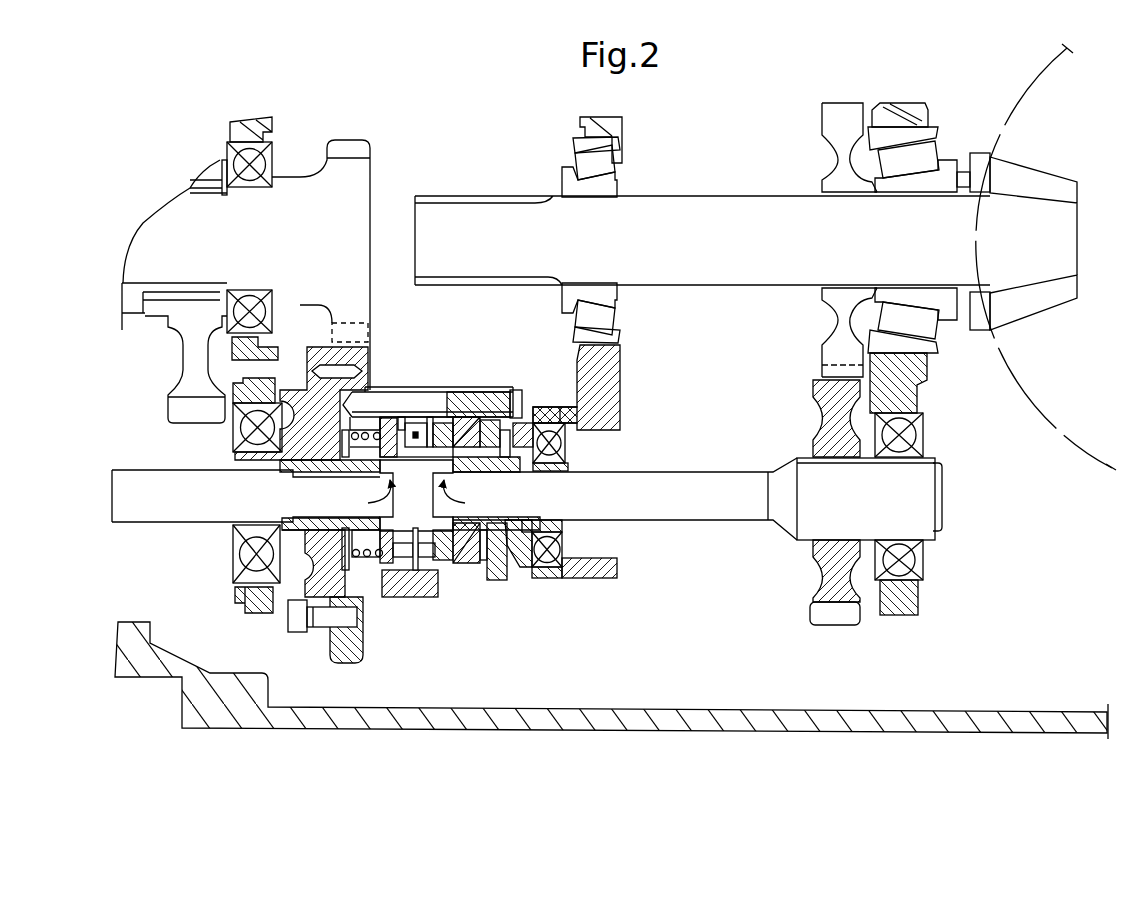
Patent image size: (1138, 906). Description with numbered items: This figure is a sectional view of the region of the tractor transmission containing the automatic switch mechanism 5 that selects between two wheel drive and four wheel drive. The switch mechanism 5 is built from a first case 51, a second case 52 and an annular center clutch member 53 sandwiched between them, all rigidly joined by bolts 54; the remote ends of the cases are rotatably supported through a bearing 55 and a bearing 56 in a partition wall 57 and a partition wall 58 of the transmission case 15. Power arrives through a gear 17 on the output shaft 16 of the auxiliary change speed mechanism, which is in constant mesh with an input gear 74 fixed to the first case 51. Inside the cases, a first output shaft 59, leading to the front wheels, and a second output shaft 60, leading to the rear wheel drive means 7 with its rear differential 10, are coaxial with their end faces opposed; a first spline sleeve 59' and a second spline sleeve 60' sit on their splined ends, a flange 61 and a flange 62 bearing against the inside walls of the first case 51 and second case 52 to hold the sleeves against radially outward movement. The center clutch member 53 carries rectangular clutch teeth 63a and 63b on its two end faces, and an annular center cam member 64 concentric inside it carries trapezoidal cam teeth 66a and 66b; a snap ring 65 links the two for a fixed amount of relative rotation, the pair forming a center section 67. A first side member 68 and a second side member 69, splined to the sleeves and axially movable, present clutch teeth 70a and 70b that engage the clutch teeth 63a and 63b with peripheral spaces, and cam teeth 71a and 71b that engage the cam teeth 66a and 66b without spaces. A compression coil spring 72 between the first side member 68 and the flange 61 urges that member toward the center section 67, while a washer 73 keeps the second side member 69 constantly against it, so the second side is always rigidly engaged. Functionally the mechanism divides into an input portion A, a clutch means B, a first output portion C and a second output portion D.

The automatic switch mechanism 5 is at (577, 385).
The rear wheel drive means 7 is at (968, 399).
The rear differential 10 is at (1042, 329).
The transmission case 15 is at (615, 712).
The output shaft of the auxiliary change speed mechanism 16 is at (142, 240).
The gear 17 is at (363, 141).
The first case 51 is at (315, 638).
The second case 52 is at (470, 567).
The annular center clutch member 53 is at (415, 598).
The bolts 54 is at (539, 386).
The bearing 55 is at (236, 569).
The bearing 56 is at (566, 563).
The partition wall 57 is at (244, 607).
The partition wall 58 is at (604, 574).
The first output shaft 59 is at (246, 516).
The first spline sleeve 59' is at (330, 528).
The second output shaft 60 is at (697, 513).
The second spline sleeve 60' is at (531, 565).
The flange 61 is at (354, 560).
The flange 62 is at (487, 560).
The clutch teeth 63a is at (403, 447).
The clutch teeth 63b is at (428, 425).
The annular center cam member 64 is at (418, 462).
The snap ring 65 is at (428, 580).
The cam teeth 66a is at (392, 445).
The cam teeth 66b is at (575, 409).
The center section 67 is at (430, 420).
The first side member 68 is at (186, 386).
The second side member 69 is at (445, 425).
The clutch teeth 70a is at (437, 437).
The clutch teeth 70b is at (443, 405).
The cam teeth 71a is at (377, 413).
The cam teeth 71b is at (590, 409).
The compression coil spring 72 is at (368, 560).
The washer 73 is at (568, 466).
The input gear 74 is at (346, 330).
The input portion A is at (421, 404).
The clutch means B is at (400, 568).
The first output portion C is at (373, 497).
The second output portion D is at (458, 497).